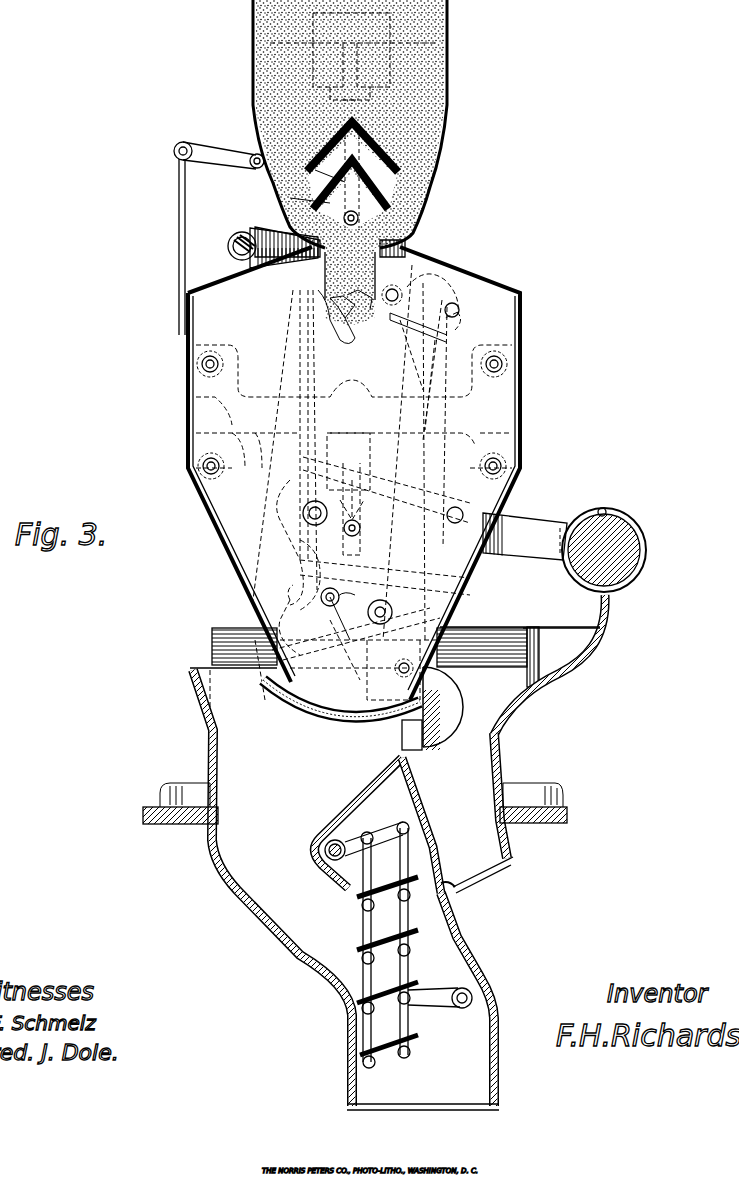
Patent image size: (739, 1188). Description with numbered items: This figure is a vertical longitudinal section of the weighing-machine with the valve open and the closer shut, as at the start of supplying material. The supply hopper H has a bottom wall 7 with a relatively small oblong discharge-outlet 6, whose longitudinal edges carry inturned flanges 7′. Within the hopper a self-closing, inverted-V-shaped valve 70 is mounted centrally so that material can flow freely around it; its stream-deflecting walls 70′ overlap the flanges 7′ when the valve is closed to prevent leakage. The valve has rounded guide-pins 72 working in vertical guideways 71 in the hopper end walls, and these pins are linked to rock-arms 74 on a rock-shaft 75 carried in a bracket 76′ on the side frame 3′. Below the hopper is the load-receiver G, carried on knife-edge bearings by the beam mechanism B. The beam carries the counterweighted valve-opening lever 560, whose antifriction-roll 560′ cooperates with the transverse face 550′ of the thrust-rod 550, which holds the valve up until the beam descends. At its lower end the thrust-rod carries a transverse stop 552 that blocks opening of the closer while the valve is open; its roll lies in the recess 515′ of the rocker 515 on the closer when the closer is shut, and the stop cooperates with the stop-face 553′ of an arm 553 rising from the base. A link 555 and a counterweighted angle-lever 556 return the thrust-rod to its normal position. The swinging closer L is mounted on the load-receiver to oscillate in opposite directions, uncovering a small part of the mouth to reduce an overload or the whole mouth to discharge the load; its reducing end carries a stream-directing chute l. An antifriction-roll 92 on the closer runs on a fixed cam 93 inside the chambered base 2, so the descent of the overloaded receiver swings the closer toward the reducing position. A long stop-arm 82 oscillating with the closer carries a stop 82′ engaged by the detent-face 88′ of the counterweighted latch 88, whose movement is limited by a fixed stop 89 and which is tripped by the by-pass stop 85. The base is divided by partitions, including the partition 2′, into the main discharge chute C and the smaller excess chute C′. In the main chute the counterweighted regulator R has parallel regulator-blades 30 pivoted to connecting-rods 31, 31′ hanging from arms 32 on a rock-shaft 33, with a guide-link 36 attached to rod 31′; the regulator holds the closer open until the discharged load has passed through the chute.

The supply hopper H is at (252, 74).
The vertical guideways 71 is at (317, 130).
The valve 70 is at (350, 192).
The stream-deflecting walls 70′ is at (315, 176).
The guide-pins 72 is at (307, 190).
The inturned flanged portions 7′ is at (285, 238).
The bottom wall 7 is at (412, 245).
The rock-arms 74 is at (268, 238).
The bracket 76′ is at (234, 238).
The rock-shaft 75 is at (234, 253).
The discharge-outlet 6 is at (326, 252).
The load-receiver G is at (520, 330).
The thrust-rod 550 is at (300, 376).
The transverse face 550′ is at (312, 485).
The link 555 is at (375, 450).
The counterweighted angle-lever 556 is at (455, 498).
The antifriction-roll 560′ is at (305, 520).
The rocker 515 is at (357, 521).
The recess 515′ is at (340, 594).
The arm 553 is at (290, 594).
The stop 552 is at (360, 650).
The stop-face 553′ is at (275, 660).
The by-pass stop 85 is at (340, 325).
The latch 88 is at (412, 285).
The detent-face 88′ is at (440, 285).
The fixed stop 89 is at (460, 310).
The stop 82′ is at (458, 322).
The stop-arm 82 is at (435, 385).
The beam mechanism B is at (525, 536).
The counterweighted lever 560 is at (590, 512).
The side frame 3′ is at (455, 625).
The antifriction-roll 92 is at (400, 676).
The closer L is at (341, 706).
The stream-directing chute l is at (443, 708).
The fixed cam 93 is at (402, 730).
The chambered supporting-base 2 is at (500, 752).
The smaller discharge chute C′ is at (505, 855).
The main discharge chute C is at (335, 980).
The partition 2′ is at (368, 795).
The rock-shaft 33 is at (328, 860).
The arms 32 is at (385, 830).
The connecting-rod 31 is at (363, 920).
The connecting-rod 31′ is at (407, 913).
The regulator-blades 30 is at (383, 940).
The regulator R is at (424, 952).
The guide-link 36 is at (442, 1008).